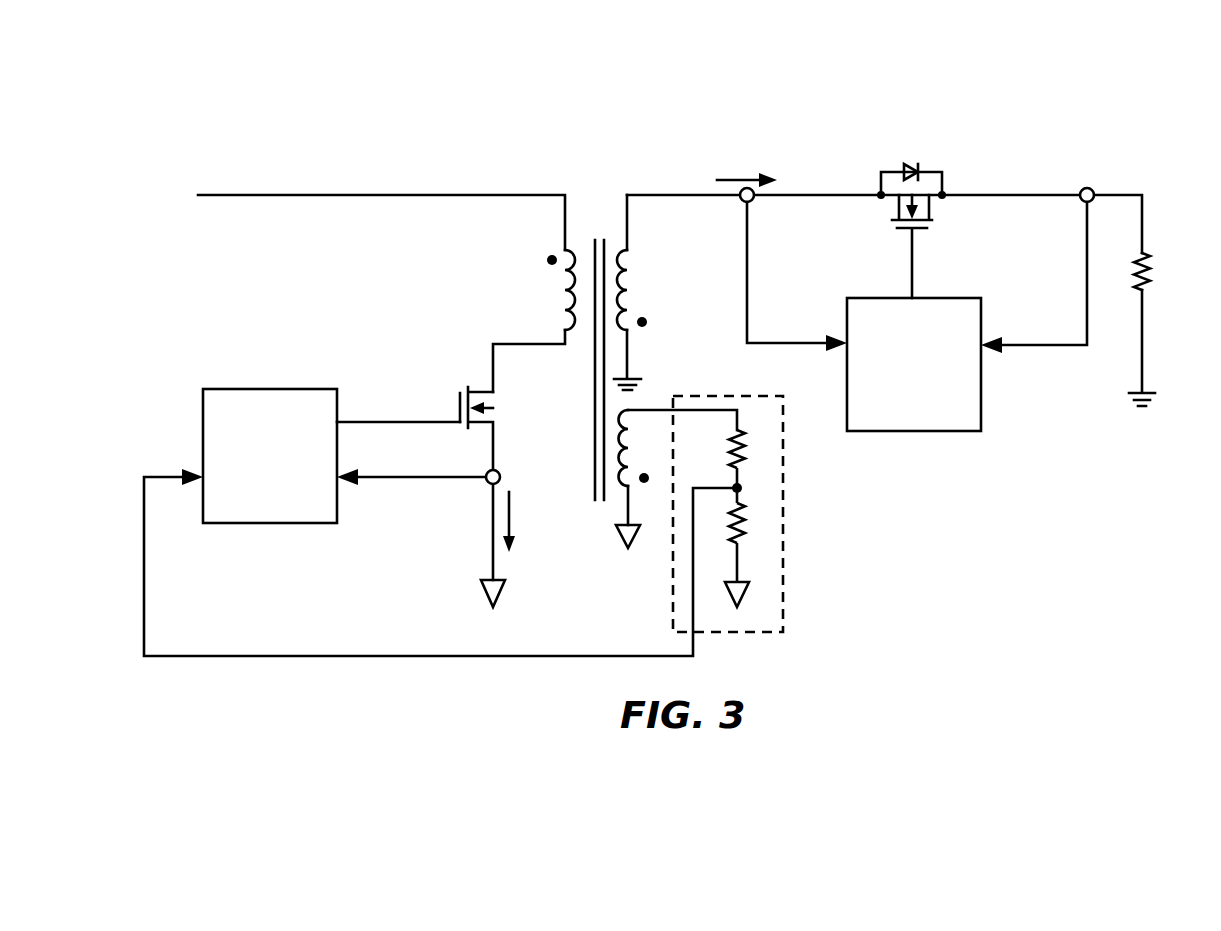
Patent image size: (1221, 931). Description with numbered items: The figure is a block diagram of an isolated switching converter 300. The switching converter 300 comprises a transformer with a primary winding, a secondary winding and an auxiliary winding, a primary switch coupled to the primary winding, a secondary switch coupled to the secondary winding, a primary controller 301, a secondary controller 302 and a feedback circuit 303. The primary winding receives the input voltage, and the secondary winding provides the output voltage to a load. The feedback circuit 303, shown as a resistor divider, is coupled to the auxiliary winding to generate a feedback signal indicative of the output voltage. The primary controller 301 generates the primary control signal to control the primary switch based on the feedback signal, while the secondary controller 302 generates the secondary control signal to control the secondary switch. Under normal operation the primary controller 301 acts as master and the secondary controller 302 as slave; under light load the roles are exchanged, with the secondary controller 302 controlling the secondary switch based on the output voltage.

The isolated switching converter 300 is at (670, 354).
The primary controller 301 is at (241, 524).
The secondary controller 302 is at (887, 432).
The feedback circuit 303 is at (672, 579).